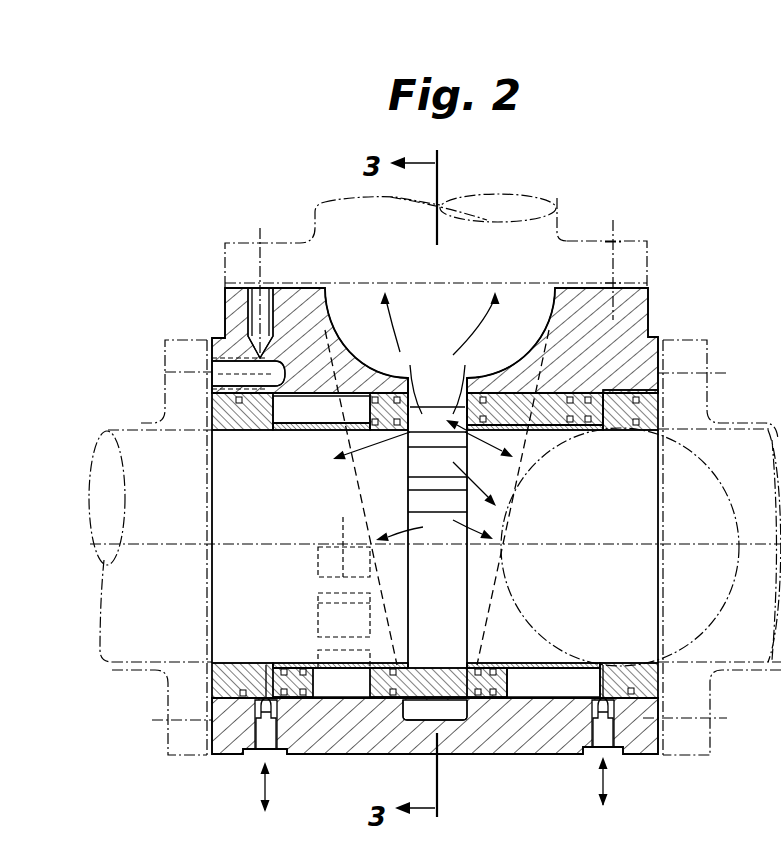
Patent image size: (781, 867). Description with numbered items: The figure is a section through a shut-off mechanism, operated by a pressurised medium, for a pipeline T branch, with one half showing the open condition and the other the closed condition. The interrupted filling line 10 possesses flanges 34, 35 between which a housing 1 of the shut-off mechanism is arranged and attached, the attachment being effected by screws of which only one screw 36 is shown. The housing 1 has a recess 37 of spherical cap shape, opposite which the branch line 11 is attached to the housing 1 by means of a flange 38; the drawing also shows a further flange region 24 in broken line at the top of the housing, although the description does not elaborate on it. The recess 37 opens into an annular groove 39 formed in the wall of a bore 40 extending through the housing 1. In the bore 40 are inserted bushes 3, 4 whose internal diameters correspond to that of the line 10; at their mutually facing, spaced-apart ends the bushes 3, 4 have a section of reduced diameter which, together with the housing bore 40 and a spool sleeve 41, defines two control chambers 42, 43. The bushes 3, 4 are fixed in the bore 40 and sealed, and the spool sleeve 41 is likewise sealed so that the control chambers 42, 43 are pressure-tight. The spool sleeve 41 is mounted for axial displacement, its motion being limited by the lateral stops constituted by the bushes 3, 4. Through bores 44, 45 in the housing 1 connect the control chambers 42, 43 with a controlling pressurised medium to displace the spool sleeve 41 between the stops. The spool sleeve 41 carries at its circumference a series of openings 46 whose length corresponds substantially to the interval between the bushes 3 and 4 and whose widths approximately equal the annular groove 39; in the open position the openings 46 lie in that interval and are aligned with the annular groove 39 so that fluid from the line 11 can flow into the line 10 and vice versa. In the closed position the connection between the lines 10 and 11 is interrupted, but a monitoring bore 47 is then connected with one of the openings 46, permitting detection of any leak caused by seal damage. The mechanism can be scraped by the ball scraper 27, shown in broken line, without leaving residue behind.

The housing 1 is at (640, 324).
The bush 3 is at (630, 431).
The bush 4 is at (242, 428).
The filling line 10 is at (132, 431).
The branch line 11 is at (548, 193).
The flange 24 is at (287, 231).
The ball scraper 27 is at (733, 510).
The flange 34 is at (180, 730).
The flange 35 is at (707, 748).
The screw 36 is at (212, 370).
The recess 37 is at (513, 315).
The flange 38 is at (637, 267).
The annular groove 39 is at (453, 712).
The bore 40 is at (550, 698).
The spool sleeve 41 is at (553, 430).
The control chamber 42 is at (298, 413).
The control chamber 43 is at (560, 667).
The through bore 44 is at (264, 752).
The through bore 45 is at (611, 757).
The openings 46 is at (418, 472).
The monitoring bore 47 is at (290, 707).